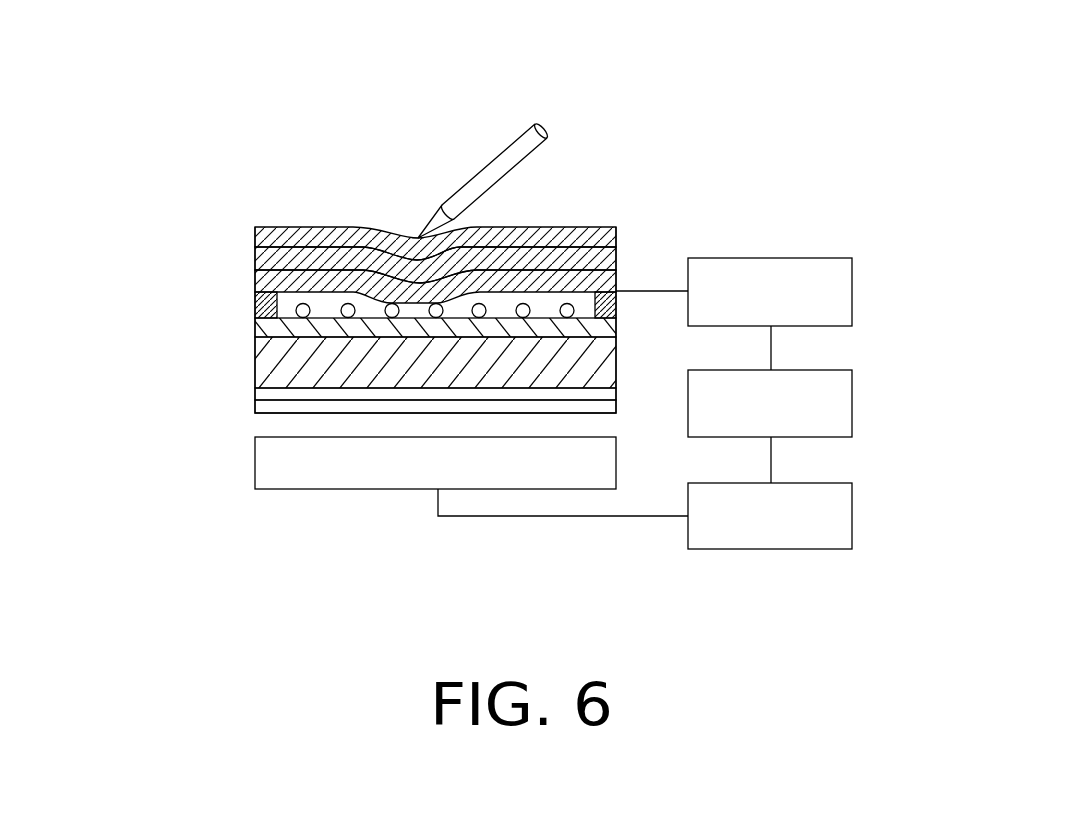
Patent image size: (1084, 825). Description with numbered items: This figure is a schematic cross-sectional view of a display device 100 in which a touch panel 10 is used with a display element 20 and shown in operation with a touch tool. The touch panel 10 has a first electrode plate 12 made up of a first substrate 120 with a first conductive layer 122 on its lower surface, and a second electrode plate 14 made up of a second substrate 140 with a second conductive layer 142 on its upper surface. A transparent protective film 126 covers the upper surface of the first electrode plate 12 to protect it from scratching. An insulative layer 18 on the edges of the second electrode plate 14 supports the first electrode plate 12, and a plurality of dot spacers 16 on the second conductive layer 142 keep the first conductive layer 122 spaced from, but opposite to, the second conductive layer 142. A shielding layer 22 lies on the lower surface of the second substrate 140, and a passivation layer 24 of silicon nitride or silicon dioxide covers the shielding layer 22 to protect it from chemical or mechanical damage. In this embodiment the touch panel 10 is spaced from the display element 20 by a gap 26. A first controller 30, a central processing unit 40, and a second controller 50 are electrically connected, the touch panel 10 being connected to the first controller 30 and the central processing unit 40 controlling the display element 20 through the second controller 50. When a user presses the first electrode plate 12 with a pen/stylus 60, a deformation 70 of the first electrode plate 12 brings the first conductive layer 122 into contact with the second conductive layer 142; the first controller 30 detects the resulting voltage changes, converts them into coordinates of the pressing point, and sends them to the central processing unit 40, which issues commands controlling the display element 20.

The display device 100 is at (500, 50).
The touch panel 10 is at (134, 200).
The first electrode plate 12 is at (172, 238).
The first substrate 120 is at (256, 251).
The first conductive layer 122 is at (256, 283).
The transparent protective film 126 is at (256, 230).
The second electrode plate 14 is at (172, 317).
The second substrate 140 is at (256, 362).
The second conductive layer 142 is at (256, 325).
The dot spacers 16 is at (566, 303).
The insulative layer 18 is at (617, 305).
The display element 20 is at (272, 478).
The shielding layer 22 is at (256, 392).
The passivation layer 24 is at (256, 403).
The gap 26 is at (263, 427).
The first controller 30 is at (845, 300).
The central processing unit 40 is at (845, 398).
The second controller 50 is at (845, 496).
The pen/stylus 60 is at (511, 152).
The deformation 70 is at (418, 238).